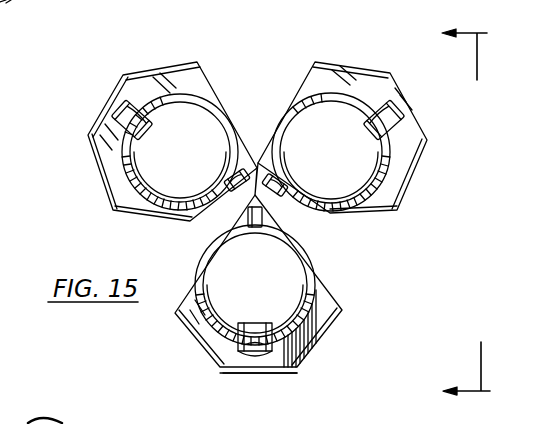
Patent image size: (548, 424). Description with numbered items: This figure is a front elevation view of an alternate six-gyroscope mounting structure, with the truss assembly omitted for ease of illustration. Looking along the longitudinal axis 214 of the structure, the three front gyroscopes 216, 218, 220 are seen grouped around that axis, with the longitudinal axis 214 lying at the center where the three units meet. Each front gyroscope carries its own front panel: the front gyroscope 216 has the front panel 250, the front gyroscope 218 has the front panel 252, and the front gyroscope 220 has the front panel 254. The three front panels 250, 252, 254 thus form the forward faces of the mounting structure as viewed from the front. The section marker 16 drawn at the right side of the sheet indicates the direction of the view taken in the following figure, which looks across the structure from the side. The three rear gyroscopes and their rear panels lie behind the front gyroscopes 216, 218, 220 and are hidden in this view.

The section line 16- 16 is at (466, 215).
The longitudinal axis 214 is at (250, 198).
The front gyroscope 216 is at (310, 320).
The front gyroscope 218 is at (148, 165).
The front gyroscope 220 is at (390, 183).
The front panel 250 is at (300, 362).
The front panel 252 is at (120, 193).
The front panel 254 is at (377, 208).